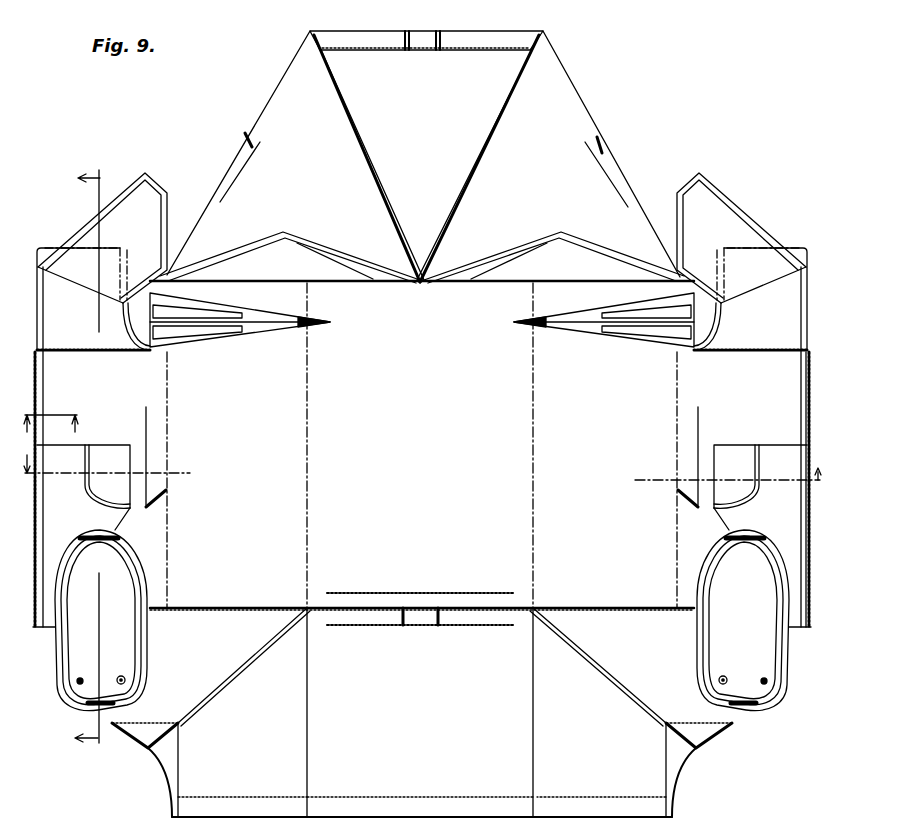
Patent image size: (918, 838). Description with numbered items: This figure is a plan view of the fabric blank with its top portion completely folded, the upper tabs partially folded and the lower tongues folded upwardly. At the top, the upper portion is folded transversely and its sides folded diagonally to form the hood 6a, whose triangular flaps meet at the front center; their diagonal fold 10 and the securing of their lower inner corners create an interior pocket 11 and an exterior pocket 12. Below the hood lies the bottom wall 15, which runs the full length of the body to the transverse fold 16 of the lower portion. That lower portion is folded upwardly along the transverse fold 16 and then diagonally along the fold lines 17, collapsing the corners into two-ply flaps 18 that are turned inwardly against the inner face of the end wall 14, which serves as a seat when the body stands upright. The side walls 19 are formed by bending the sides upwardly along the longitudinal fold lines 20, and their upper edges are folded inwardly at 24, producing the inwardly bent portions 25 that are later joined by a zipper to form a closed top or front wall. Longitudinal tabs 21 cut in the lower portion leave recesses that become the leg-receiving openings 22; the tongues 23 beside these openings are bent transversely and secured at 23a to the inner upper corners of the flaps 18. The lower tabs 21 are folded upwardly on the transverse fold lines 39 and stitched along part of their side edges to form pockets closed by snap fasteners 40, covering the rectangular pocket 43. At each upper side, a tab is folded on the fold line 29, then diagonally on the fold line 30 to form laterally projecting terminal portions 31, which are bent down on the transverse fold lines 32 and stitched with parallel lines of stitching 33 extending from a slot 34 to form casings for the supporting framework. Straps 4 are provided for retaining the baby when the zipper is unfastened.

The straps 4 is at (222, 318).
The hood 6a is at (426, 160).
The diagonal fold 10 is at (422, 476).
The interior pocket 11 is at (100, 459).
The exterior pocket 12 is at (48, 412).
The end wall 14 is at (416, 746).
The bottom wall 15 is at (384, 580).
The transverse fold 16 is at (380, 608).
The fold lines 17 is at (240, 692).
The two-ply flaps 18 is at (248, 760).
The side walls 19 is at (228, 548).
The longitudinal fold lines 20 is at (309, 484).
The longitudinal tabs 21 is at (84, 638).
The leg-receiving openings 22 is at (142, 592).
The tongues 23 is at (55, 532).
The attached portion 23a is at (416, 506).
The inward fold of side wall sections 24 is at (168, 378).
The inwardly bent portions 25 is at (86, 396).
The fold line 29 is at (48, 247).
The fold line 30 is at (78, 282).
The terminal portions 31 is at (145, 196).
The transverse fold lines 32 is at (90, 351).
The lines of stitching 33 is at (150, 450).
The slot 34 is at (168, 497).
The transverse fold lines 39 is at (422, 620).
The snap fasteners 40 is at (80, 678).
The pocket 43 is at (104, 455).